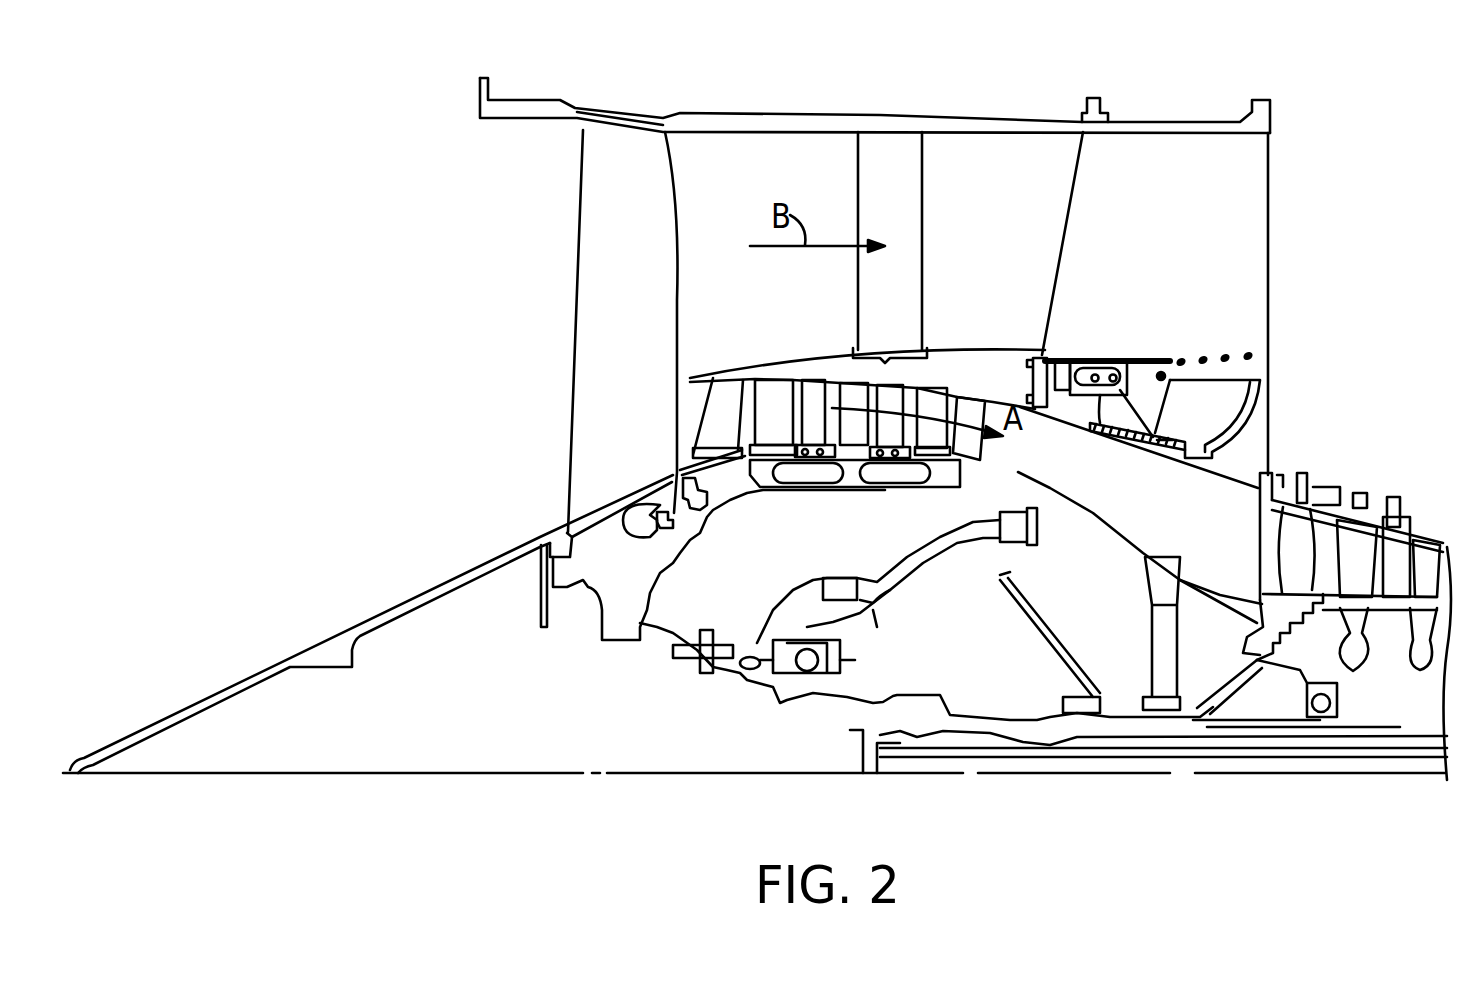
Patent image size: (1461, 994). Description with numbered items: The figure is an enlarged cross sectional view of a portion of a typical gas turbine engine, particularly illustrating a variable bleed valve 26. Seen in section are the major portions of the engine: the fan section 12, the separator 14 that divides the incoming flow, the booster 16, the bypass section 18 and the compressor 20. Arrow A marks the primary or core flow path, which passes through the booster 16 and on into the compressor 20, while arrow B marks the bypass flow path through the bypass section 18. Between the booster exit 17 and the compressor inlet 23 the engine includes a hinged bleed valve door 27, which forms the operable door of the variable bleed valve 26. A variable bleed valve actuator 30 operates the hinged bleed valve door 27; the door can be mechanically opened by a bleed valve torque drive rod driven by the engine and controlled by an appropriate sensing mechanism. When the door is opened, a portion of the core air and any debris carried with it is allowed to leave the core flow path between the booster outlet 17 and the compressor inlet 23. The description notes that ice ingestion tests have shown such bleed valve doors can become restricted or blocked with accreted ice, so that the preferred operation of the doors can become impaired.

The fan section 12 is at (576, 310).
The separator 14 is at (788, 352).
The booster 16 is at (932, 400).
The booster outlet 17 is at (1033, 467).
The bypass section 18 is at (992, 163).
The compressor 20 is at (1358, 540).
The compressor inlet 23 is at (1270, 546).
The variable bleed valve 26 is at (1224, 451).
The bleed valve door 27 is at (1175, 440).
The variable bleed valve actuator 30 is at (1103, 355).